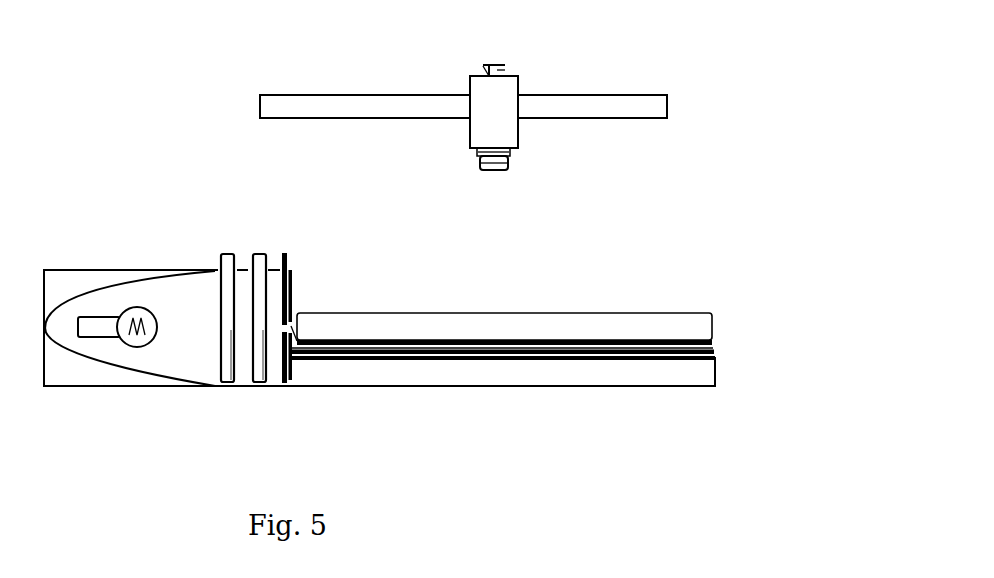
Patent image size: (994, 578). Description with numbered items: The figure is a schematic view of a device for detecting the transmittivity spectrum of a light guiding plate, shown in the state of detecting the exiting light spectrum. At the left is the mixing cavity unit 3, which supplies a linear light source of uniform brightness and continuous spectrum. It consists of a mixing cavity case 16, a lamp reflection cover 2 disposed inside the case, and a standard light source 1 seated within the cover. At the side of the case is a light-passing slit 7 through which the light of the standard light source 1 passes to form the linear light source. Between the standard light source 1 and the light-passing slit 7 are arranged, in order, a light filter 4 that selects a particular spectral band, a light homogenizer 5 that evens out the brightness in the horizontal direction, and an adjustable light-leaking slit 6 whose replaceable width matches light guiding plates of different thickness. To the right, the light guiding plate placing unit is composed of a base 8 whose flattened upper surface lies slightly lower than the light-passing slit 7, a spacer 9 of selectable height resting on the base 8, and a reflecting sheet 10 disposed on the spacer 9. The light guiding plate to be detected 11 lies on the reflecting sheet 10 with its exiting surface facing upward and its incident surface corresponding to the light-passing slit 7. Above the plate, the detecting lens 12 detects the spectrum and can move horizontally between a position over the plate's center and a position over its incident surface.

The standard light source 1 is at (135, 347).
The lamp reflection cover 2 is at (152, 378).
The mixing cavity unit 3 is at (192, 345).
The light filter 4 is at (230, 345).
The light homogenizer 5 is at (262, 345).
The adjustable light-leaking slit 6 is at (288, 345).
The light-passing slit 7 is at (300, 358).
The base 8 is at (333, 373).
The spacer 9 is at (345, 353).
The reflecting sheet 10 is at (377, 348).
The light guiding plate to be detected 11 is at (435, 330).
The detecting lens 12 is at (502, 129).
The mixing cavity case 16 is at (92, 387).